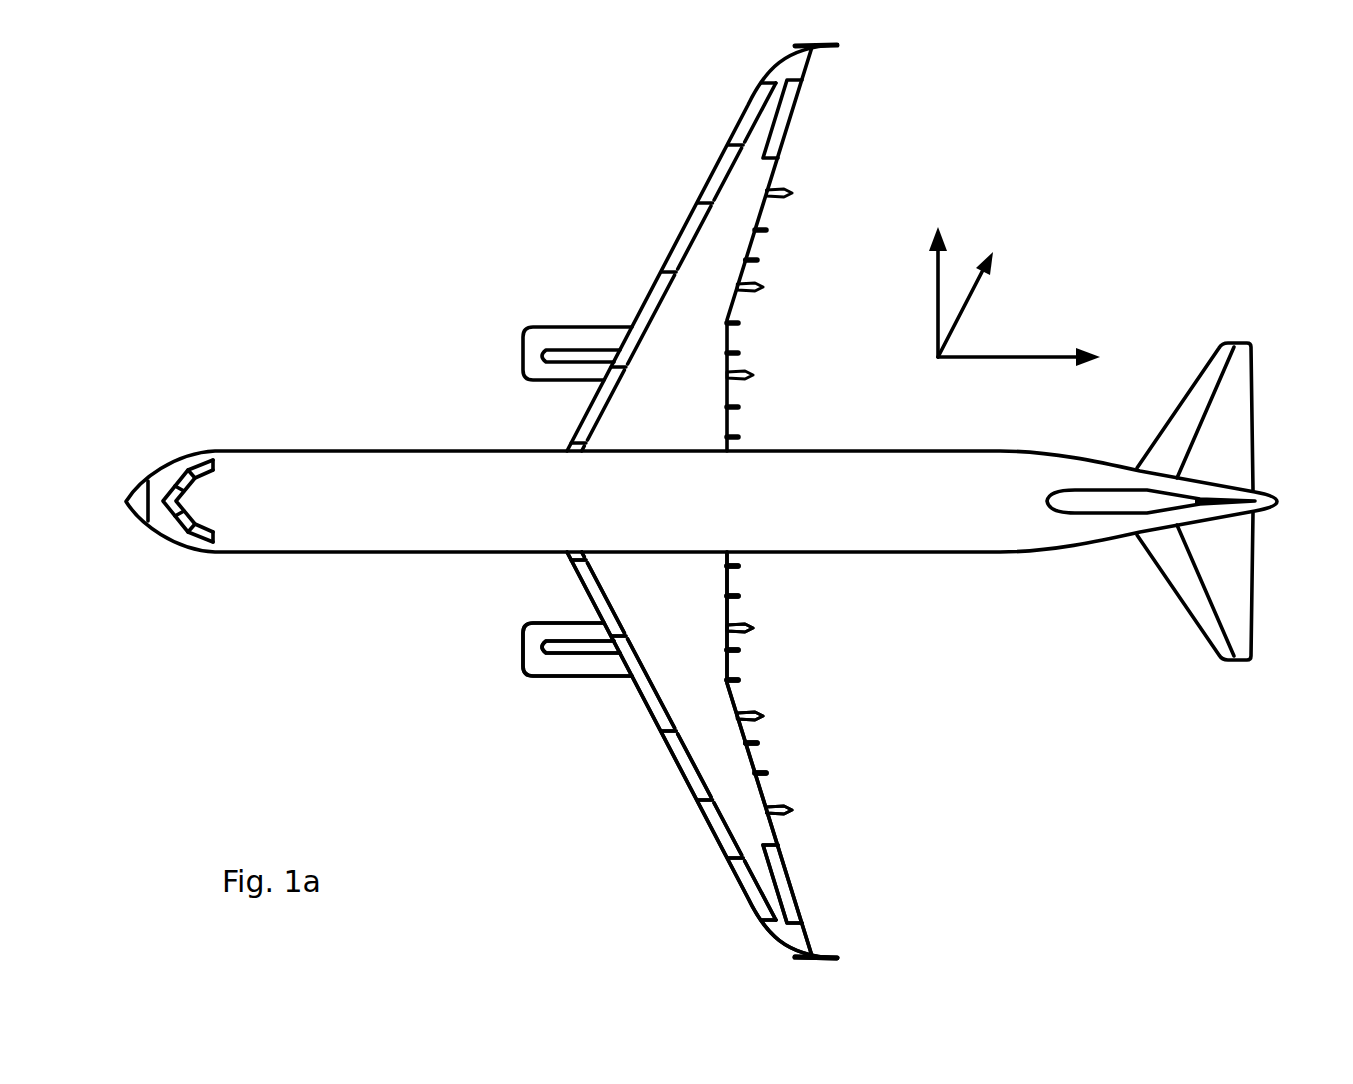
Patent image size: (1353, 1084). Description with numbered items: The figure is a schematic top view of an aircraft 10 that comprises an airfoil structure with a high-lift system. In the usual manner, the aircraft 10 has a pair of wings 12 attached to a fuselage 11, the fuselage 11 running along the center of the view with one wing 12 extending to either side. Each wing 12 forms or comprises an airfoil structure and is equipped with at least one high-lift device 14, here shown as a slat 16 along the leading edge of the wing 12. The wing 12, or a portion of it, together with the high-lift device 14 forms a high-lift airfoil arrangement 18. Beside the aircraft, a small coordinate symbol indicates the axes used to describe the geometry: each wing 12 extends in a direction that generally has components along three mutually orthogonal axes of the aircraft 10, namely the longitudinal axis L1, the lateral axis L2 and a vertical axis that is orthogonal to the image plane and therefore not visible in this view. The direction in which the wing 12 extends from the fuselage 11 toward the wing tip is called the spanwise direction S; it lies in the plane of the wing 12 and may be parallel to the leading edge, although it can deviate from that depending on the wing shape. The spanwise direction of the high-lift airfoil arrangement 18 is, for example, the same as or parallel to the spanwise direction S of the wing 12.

The aircraft 10 is at (197, 253).
The fuselage 11 is at (335, 553).
The wing 12 is at (708, 318).
The high-lift device 14 is at (686, 237).
The slat 16 is at (671, 250).
The high-lift airfoil arrangement 18 is at (668, 162).
The longitudinal axis L1 is at (1000, 360).
The lateral axis L2 is at (935, 288).
The spanwise direction S is at (967, 302).